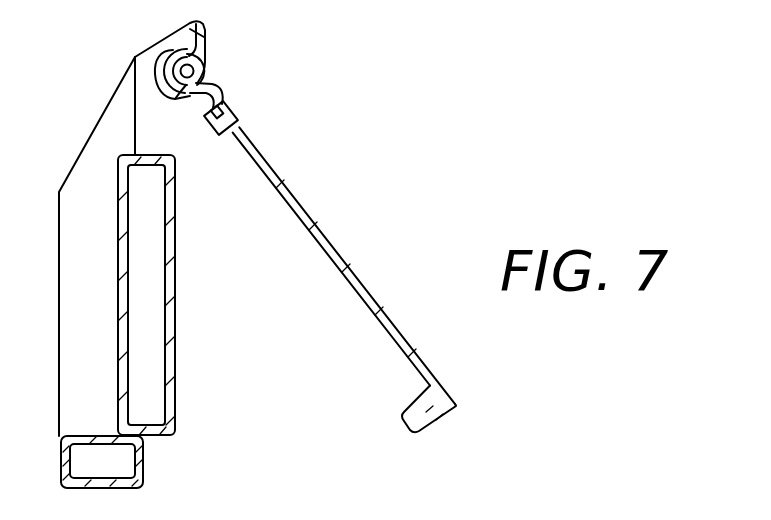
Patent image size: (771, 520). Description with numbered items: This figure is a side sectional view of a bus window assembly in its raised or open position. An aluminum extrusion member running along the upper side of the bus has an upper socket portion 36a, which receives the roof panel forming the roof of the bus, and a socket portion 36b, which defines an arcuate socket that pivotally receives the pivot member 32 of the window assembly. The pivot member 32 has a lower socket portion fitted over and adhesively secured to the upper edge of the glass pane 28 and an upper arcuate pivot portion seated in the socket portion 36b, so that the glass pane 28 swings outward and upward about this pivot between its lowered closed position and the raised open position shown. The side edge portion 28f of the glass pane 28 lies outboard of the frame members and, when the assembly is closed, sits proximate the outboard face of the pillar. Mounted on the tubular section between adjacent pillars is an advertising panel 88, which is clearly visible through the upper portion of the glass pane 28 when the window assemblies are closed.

The upper socket portion 36a is at (156, 61).
The socket portion 36b is at (206, 62).
The pivot member 32 is at (236, 94).
The glass pane 28 is at (317, 222).
The side edge portion 28f is at (402, 414).
The panel 88 is at (176, 325).